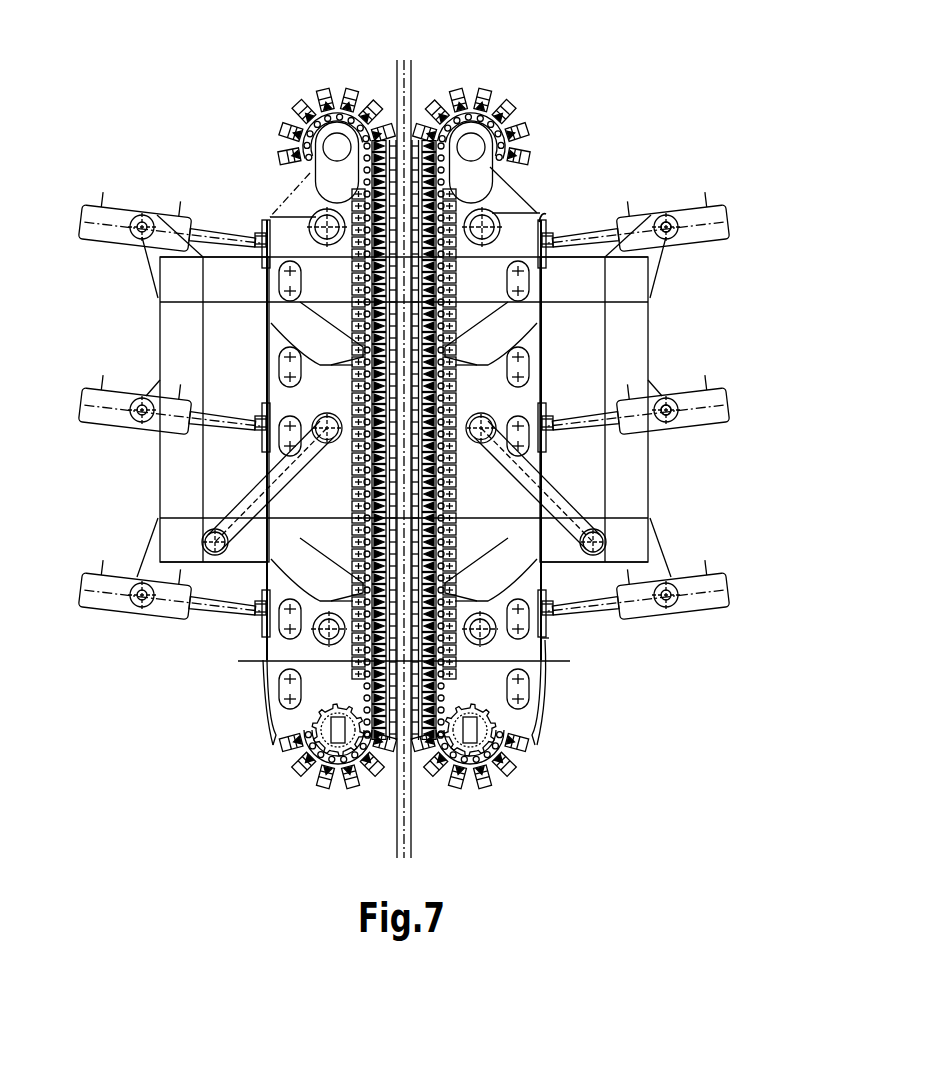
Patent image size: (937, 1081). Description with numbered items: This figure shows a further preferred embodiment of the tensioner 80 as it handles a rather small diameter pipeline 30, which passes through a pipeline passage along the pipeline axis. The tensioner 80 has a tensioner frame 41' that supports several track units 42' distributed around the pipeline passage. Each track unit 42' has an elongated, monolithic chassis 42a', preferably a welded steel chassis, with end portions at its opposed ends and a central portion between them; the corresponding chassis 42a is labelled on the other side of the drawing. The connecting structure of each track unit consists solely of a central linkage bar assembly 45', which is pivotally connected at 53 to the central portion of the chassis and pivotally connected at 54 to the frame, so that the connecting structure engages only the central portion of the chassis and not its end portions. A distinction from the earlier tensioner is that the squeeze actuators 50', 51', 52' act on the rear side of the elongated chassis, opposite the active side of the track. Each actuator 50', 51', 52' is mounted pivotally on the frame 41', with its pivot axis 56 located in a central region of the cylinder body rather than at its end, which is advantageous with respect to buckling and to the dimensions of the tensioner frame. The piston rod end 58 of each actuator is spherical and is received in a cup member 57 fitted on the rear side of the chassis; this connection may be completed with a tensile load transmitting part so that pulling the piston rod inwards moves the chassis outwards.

The pipeline 30 is at (413, 73).
The tensioner 80 is at (628, 98).
The tensioner frame 41' is at (367, 409).
The track unit 42' is at (410, 106).
The chassis 42a' is at (420, 427).
The chassis 42a is at (573, 691).
The central linkage bar assembly 45' is at (603, 485).
The squeeze actuator 50' is at (662, 381).
The squeeze actuator 51' is at (662, 562).
The squeeze actuator 52' is at (651, 194).
The pivotal connection to chassis 53 is at (492, 426).
The pivotal connection to frame 54 is at (604, 530).
The pivot axis 56 is at (667, 222).
The cup member 57 is at (549, 226).
The piston rod end 58 is at (548, 250).